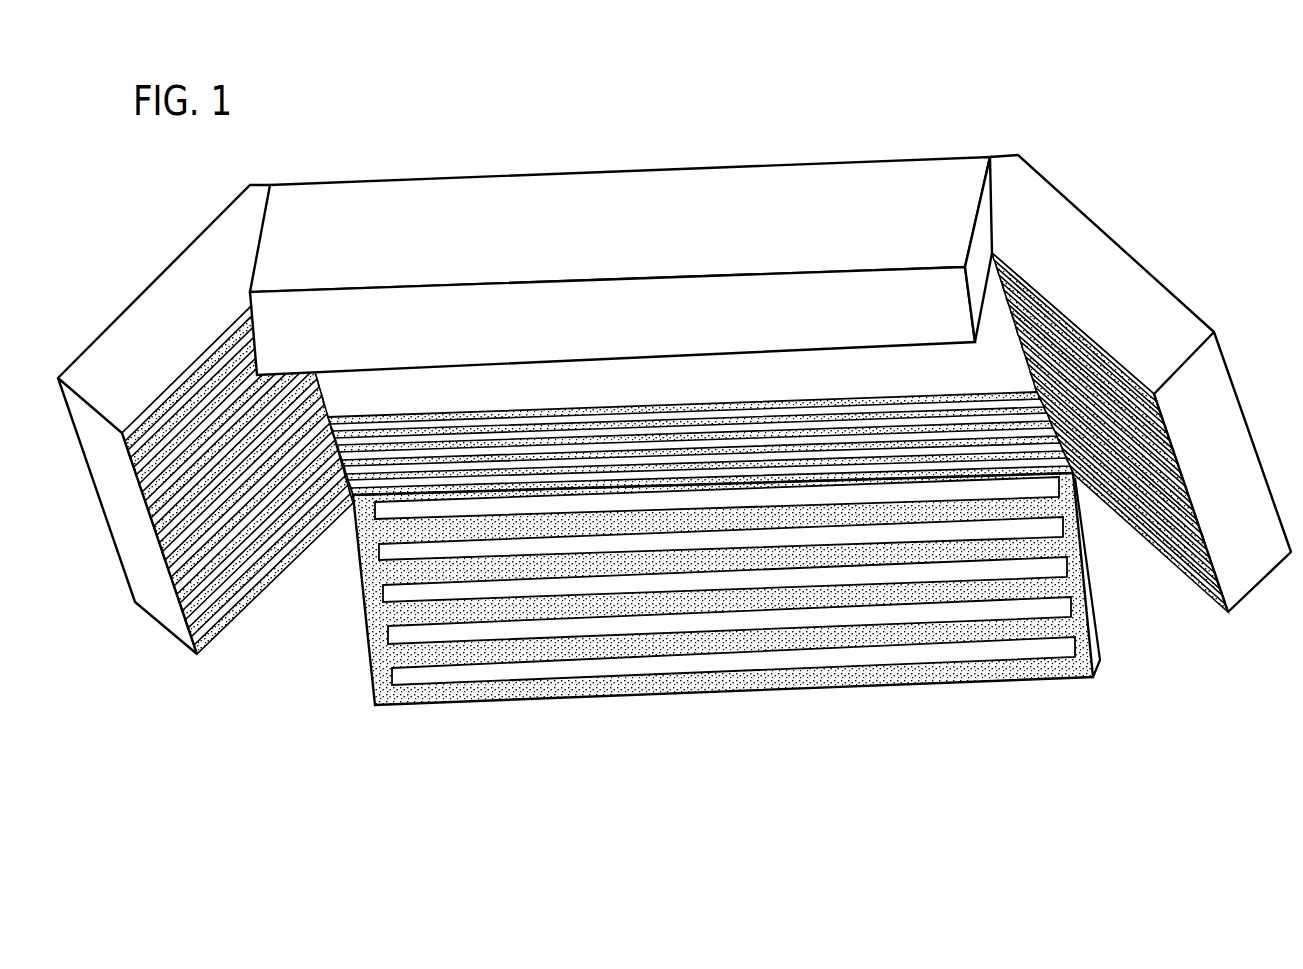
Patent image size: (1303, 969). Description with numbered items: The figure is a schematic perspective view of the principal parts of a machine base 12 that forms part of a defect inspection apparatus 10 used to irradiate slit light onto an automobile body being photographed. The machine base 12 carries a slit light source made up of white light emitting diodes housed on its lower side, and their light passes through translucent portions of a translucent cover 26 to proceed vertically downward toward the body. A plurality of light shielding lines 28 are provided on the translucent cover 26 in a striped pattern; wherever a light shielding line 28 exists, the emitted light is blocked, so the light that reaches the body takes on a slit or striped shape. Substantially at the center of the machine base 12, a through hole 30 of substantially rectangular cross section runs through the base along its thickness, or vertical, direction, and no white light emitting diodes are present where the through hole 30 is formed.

The defect inspection apparatus 10 is at (338, 137).
The machine base 12 is at (840, 160).
The translucent cover 26 is at (675, 505).
The light shielding lines 28 is at (241, 588).
The through hole 30 is at (565, 385).